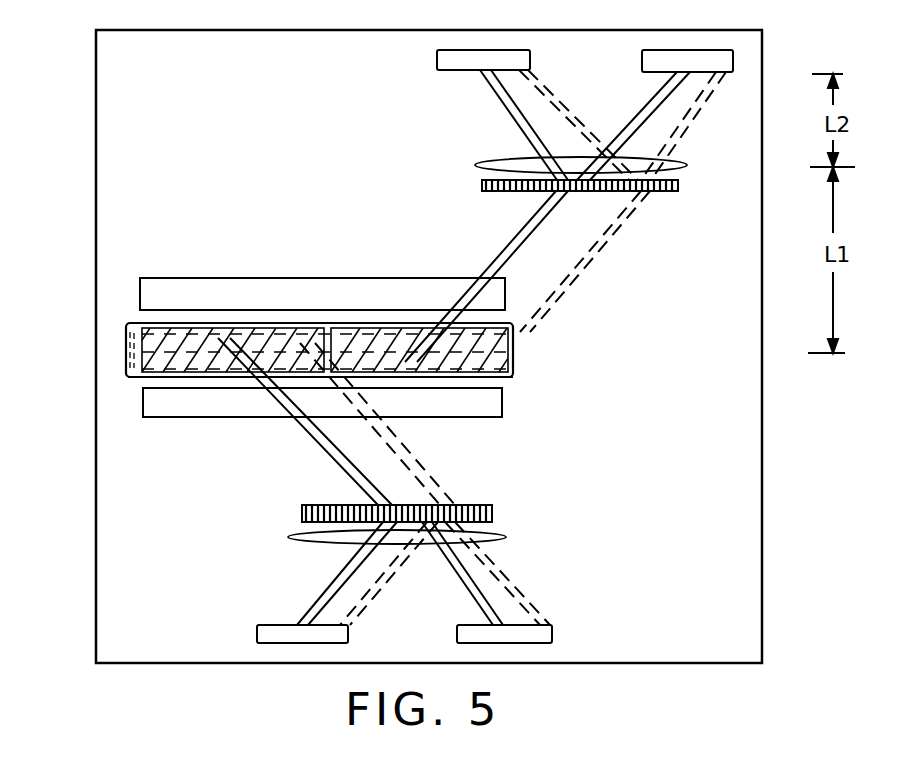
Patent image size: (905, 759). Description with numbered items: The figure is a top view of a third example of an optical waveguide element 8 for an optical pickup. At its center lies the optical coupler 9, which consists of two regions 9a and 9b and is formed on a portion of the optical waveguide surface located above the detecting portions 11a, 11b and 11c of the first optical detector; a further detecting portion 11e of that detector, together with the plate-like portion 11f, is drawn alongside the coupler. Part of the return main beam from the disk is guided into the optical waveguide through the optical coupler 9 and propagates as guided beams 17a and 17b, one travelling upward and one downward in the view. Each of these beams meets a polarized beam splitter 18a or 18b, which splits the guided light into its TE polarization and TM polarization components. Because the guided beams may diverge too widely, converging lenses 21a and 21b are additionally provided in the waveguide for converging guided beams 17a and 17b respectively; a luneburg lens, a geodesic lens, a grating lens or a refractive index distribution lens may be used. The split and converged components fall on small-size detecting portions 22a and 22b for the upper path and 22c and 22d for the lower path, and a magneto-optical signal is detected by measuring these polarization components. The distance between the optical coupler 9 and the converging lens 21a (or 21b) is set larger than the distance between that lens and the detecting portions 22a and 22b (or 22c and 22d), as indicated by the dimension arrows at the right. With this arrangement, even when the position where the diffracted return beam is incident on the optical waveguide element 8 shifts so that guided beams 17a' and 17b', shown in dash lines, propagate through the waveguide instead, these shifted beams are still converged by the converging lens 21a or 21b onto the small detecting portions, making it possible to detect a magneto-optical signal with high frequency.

The optical waveguide element 8 is at (105, 74).
The detecting portion 22a is at (642, 64).
The detecting portion 22b is at (437, 62).
The detecting portion 22c is at (537, 632).
The detecting portion 22d is at (270, 630).
The converging lens 21a is at (682, 163).
The converging lens 21b is at (497, 537).
The polarized beam splitter 18a is at (672, 193).
The polarized beam splitter 18b is at (487, 508).
The guided beam 17a is at (547, 216).
The guided beam 17a' is at (622, 201).
The guided beam 17b is at (360, 481).
The guided beam 17b' is at (425, 484).
The detecting portion 11a is at (515, 360).
The detecting portion 11b is at (515, 340).
The detecting portion 11c is at (138, 348).
The detecting portion 11e is at (205, 287).
The plate 11f is at (183, 404).
The optical coupler 9 is at (513, 372).
The region of optical coupler 9a is at (512, 380).
The region of optical coupler 9b is at (128, 378).